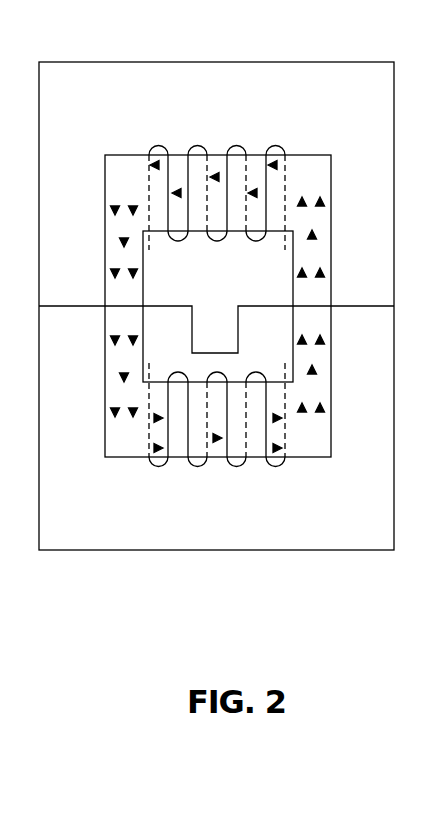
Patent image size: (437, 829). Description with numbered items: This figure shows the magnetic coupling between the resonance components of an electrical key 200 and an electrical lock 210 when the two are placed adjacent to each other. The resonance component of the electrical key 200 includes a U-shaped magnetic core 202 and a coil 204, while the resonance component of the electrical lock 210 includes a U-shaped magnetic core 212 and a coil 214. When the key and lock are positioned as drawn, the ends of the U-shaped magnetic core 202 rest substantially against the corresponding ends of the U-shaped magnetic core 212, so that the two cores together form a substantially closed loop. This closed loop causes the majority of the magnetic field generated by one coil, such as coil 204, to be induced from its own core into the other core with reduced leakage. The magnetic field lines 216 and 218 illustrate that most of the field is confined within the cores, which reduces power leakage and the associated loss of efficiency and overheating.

The electrical key 200 is at (199, 82).
The U-shaped magnetic core 202 is at (125, 165).
The coil 204 is at (233, 154).
The electrical lock 210 is at (217, 530).
The U-shaped magnetic core 212 is at (303, 456).
The coil 214 is at (197, 467).
The magnetic field line 216 is at (327, 202).
The magnetic field line 218 is at (314, 372).